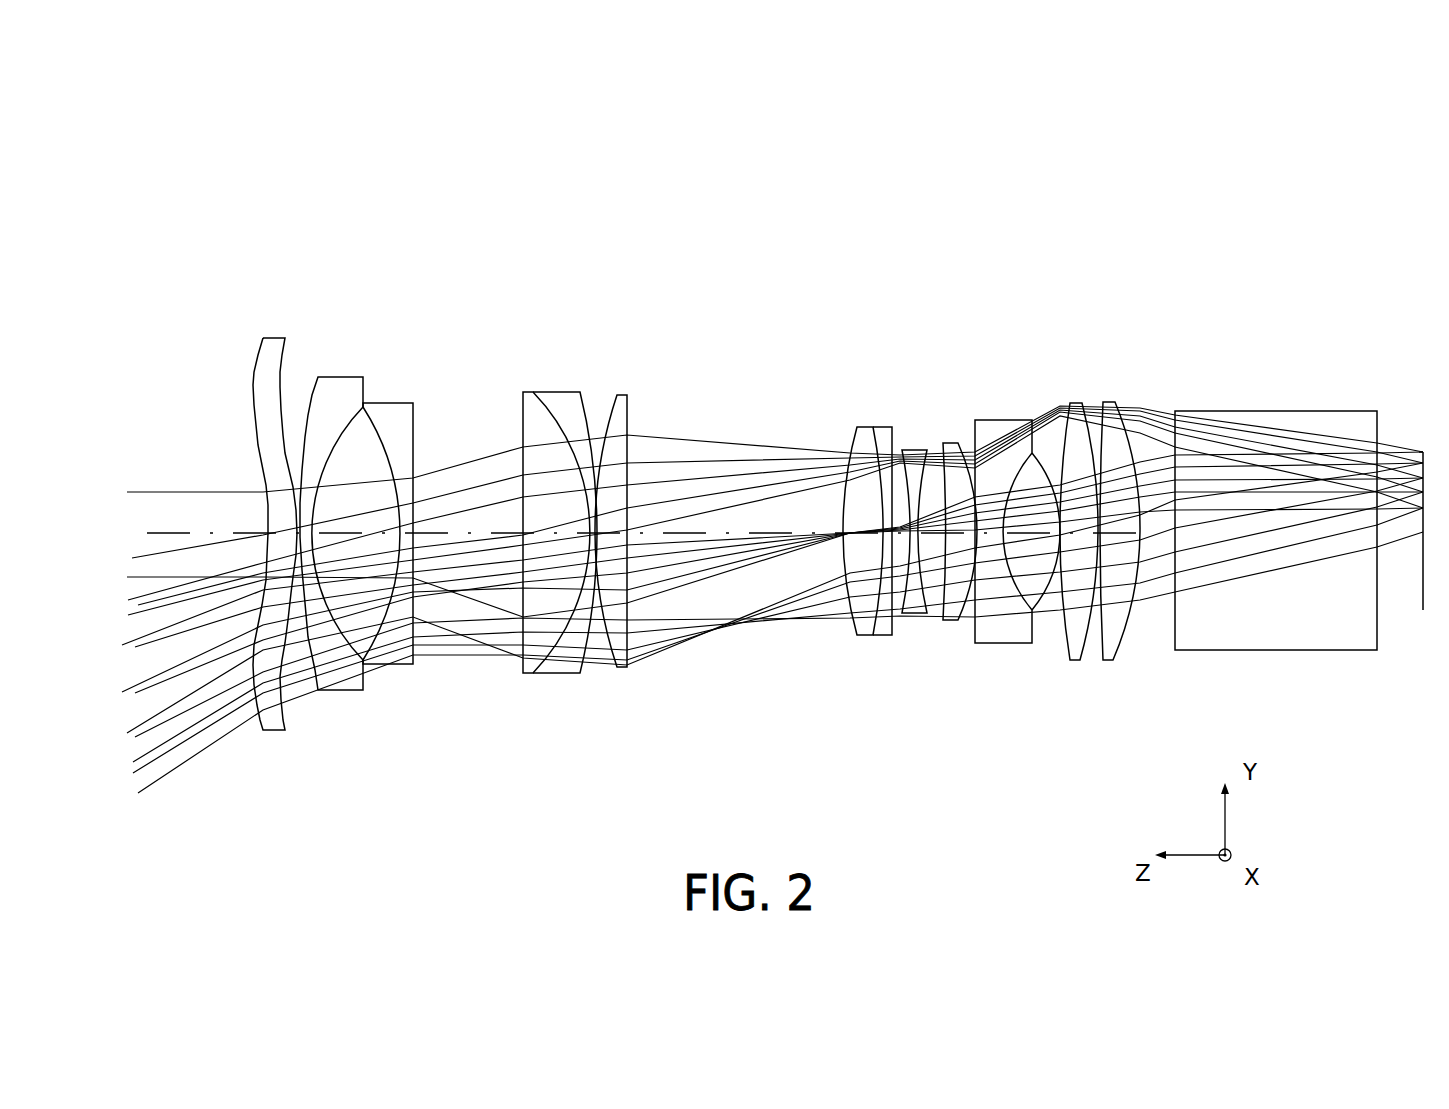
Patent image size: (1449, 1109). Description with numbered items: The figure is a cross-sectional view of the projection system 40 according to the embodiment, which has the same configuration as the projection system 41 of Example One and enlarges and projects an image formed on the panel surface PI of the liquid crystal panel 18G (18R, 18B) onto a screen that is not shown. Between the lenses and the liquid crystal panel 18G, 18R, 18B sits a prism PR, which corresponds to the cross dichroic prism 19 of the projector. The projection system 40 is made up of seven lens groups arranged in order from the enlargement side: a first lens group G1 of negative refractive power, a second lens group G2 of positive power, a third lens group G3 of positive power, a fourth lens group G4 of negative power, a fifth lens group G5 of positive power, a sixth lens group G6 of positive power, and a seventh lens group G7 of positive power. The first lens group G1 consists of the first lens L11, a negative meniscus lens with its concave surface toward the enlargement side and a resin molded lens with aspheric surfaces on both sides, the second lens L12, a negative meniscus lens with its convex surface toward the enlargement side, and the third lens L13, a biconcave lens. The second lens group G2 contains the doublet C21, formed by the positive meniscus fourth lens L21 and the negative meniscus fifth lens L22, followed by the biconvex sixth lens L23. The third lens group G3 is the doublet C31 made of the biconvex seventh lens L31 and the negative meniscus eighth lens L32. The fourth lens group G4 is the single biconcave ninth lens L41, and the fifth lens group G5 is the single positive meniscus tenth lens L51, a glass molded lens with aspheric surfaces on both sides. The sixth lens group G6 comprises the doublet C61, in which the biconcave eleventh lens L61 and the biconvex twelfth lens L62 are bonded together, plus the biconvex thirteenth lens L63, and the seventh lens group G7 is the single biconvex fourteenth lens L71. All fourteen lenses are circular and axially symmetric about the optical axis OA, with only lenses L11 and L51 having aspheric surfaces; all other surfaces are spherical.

The first lens L11 is at (272, 352).
The second lens L12 is at (340, 385).
The third lens L13 is at (400, 408).
The fourth lens L21 is at (531, 402).
The fifth lens L22 is at (568, 405).
The sixth lens L23 is at (623, 403).
The seventh lens L31 is at (862, 427).
The eighth lens L32 is at (887, 427).
The ninth lens L41 is at (921, 433).
The tenth lens L51 is at (963, 428).
The eleventh lens L61 is at (1006, 430).
The twelfth lens L62 is at (1040, 430).
The thirteenth lens L63 is at (1084, 426).
The fourteenth lens L71 is at (1127, 425).
The doublet C21 is at (500, 252).
The doublet C31 is at (834, 286).
The doublet C61 is at (1057, 294).
The first lens group G1 is at (250, 732).
The second lens group G2 is at (513, 700).
The third lens group G3 is at (847, 655).
The fourth lens group G4 is at (902, 655).
The fifth lens group G5 is at (972, 655).
The sixth lens group G6 is at (975, 673).
The seventh lens group G7 is at (1100, 667).
The optical axis OA is at (445, 532).
The prism PR is at (1258, 411).
The cross dichroic prism 19 is at (1276, 479).
The panel surface PI is at (1411, 447).
The liquid crystal panel 18G is at (1384, 542).
The liquid crystal panel 18B is at (1384, 542).
The liquid crystal panel 18R is at (1422, 612).
The projection system 41 is at (1110, 220).
The projection system 40 is at (844, 469).